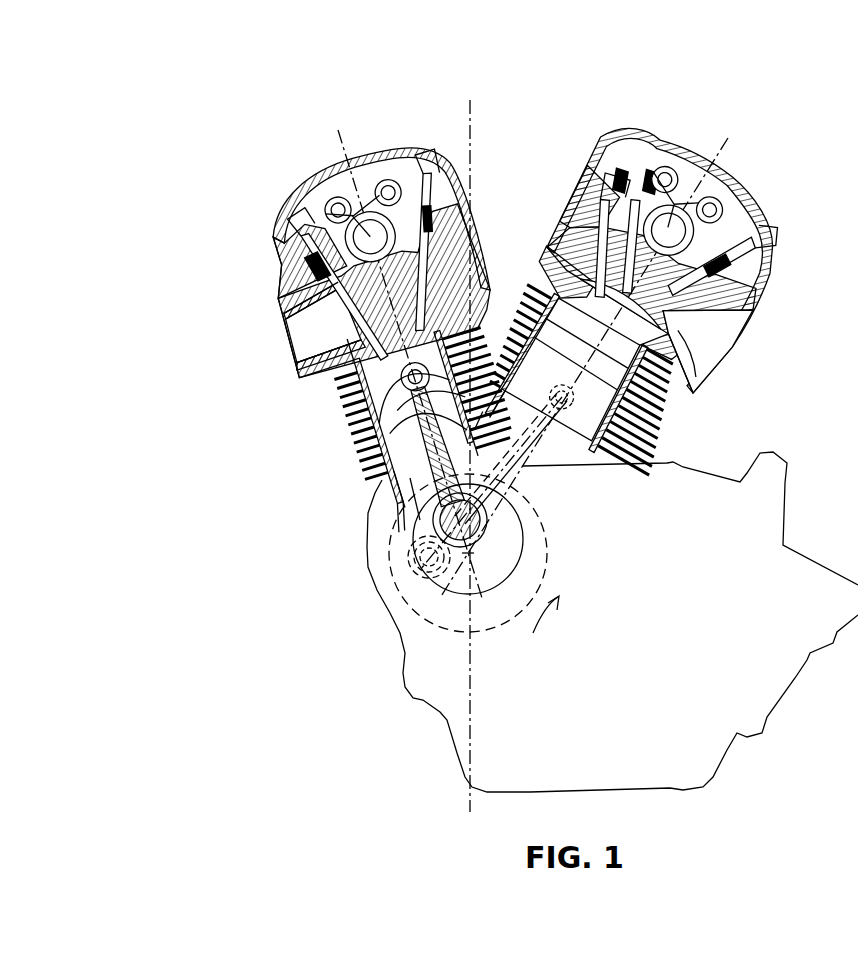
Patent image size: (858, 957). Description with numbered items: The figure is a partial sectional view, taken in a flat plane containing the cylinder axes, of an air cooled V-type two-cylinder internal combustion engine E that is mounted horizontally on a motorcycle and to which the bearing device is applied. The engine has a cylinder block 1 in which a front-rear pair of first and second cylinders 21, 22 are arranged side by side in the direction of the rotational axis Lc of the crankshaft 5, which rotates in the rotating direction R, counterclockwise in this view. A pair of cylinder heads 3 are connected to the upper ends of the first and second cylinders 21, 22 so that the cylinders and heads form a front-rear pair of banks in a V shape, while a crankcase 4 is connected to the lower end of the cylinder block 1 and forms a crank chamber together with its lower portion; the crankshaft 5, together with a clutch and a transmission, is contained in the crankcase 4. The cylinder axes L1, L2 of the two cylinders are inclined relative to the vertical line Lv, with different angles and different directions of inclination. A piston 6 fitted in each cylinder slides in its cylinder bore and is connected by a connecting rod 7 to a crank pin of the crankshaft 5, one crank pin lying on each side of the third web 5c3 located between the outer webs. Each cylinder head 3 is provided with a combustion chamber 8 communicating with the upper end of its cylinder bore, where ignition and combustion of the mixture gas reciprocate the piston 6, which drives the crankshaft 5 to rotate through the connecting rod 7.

The cylinder block 1 is at (364, 487).
The cylinder head 3 is at (290, 300).
The crankcase 4 is at (412, 645).
The crankshaft 5 is at (546, 538).
The third web 5c3 is at (542, 525).
The piston 6 is at (333, 378).
The connecting rod 7 is at (360, 452).
The combustion chamber 8 is at (300, 338).
The first cylinder 21 is at (340, 417).
The second cylinder 22 is at (592, 403).
The internal combustion engine E is at (216, 460).
The cylinder axis of the first cylinder L1 is at (340, 135).
The cylinder axis of the second cylinder L2 is at (724, 135).
The vertical line Lv is at (470, 125).
The rotational axis Lc is at (472, 552).
The rotating direction R is at (545, 618).